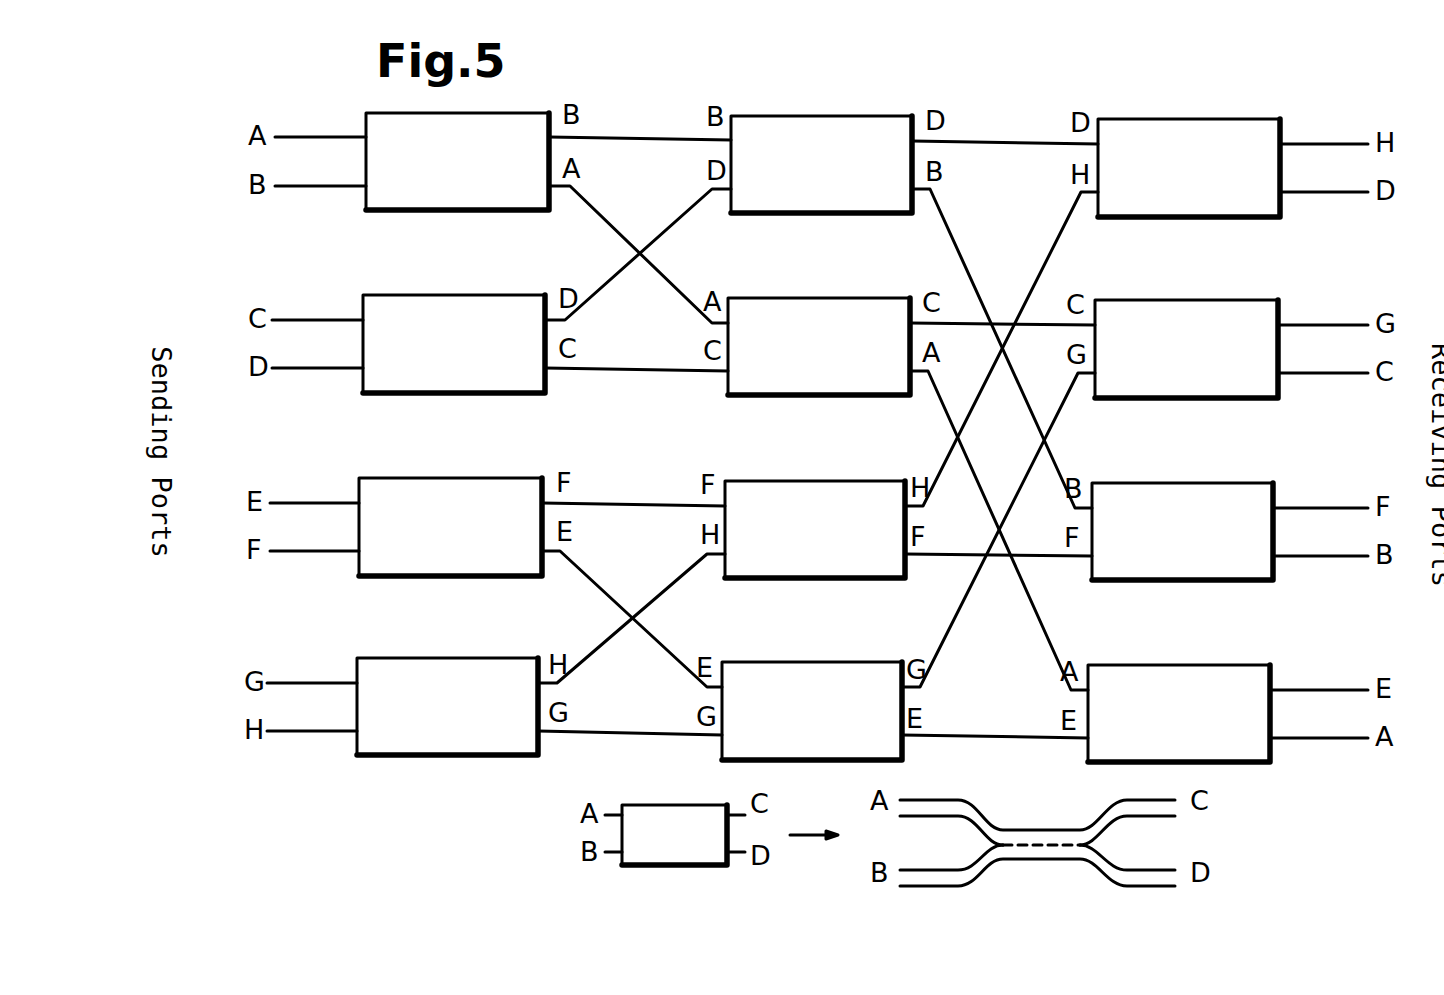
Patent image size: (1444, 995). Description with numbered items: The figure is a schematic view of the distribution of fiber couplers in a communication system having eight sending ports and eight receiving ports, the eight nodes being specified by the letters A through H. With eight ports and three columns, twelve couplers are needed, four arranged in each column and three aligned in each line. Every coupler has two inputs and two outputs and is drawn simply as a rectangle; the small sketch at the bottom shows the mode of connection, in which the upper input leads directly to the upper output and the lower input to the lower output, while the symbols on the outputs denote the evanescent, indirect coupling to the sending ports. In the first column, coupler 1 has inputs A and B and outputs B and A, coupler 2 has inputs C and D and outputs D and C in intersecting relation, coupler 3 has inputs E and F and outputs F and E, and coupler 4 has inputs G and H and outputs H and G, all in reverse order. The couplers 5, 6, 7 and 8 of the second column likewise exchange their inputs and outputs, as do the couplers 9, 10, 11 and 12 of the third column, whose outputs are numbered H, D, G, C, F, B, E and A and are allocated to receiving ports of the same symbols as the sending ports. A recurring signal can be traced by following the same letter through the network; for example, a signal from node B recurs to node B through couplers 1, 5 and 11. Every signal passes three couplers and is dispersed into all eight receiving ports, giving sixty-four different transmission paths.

The coupler 1 is at (457, 161).
The coupler 2 is at (454, 344).
The coupler 3 is at (450, 527).
The coupler 4 is at (447, 706).
The coupler 5 is at (821, 164).
The coupler 6 is at (819, 346).
The coupler 7 is at (815, 529).
The coupler 8 is at (812, 711).
The coupler 9 is at (1189, 168).
The coupler 10 is at (1186, 349).
The coupler 11 is at (1182, 531).
The coupler 12 is at (1179, 713).